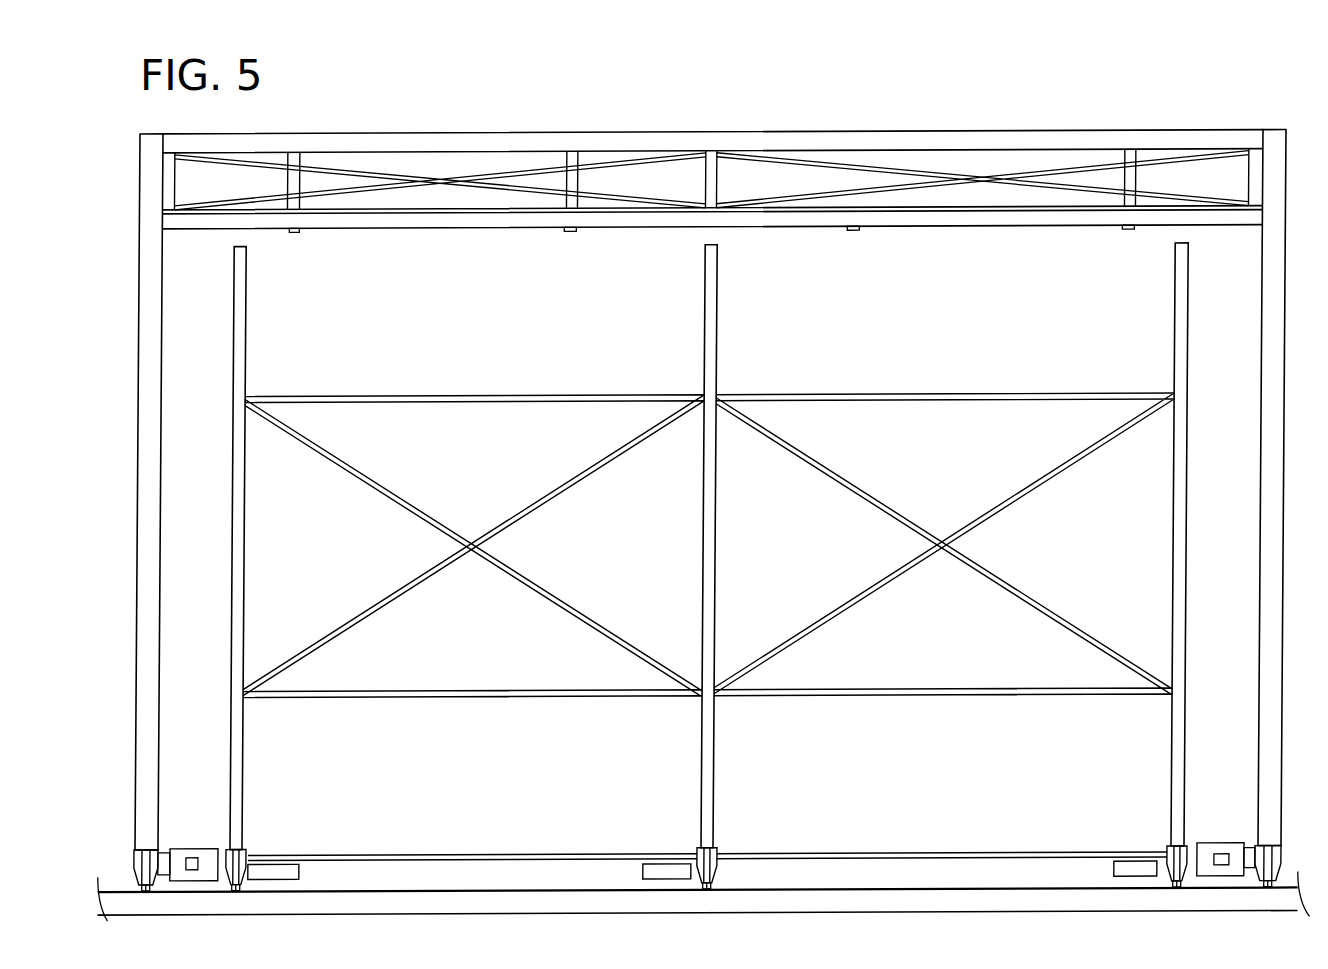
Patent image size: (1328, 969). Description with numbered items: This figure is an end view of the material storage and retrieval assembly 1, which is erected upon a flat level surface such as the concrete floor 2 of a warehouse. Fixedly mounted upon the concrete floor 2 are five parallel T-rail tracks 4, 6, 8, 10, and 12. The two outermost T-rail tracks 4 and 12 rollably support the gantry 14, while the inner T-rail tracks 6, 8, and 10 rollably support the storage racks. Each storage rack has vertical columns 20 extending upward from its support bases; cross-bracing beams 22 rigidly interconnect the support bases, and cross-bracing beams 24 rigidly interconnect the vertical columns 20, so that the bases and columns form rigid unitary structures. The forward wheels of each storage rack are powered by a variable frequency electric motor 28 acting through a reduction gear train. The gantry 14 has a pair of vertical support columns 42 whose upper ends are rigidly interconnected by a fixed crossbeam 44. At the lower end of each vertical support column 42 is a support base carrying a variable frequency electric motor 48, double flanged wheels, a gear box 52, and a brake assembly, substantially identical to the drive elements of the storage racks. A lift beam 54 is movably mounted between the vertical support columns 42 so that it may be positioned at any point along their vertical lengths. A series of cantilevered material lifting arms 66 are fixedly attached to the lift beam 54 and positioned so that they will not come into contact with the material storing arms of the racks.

The material storage and retrieval assembly 1 is at (528, 130).
The concrete floor 2 is at (560, 900).
The T-rail track 4 is at (150, 878).
The T-rail track 6 is at (247, 882).
The T-rail track 8 is at (715, 862).
The T-rail track 10 is at (1174, 850).
The T-rail track 12 is at (1283, 852).
The gantry 14 is at (1255, 266).
The vertical column 20 is at (1185, 547).
The cross-bracing beam 22 is at (896, 857).
The cross-bracing beam 24 is at (968, 398).
The variable frequency electric motor 28 is at (1145, 872).
The vertical support column 42 is at (1273, 391).
The fixed crossbeam 44 is at (927, 187).
The variable frequency electric motor 48 is at (1224, 847).
The gear box 52 is at (1259, 855).
The lift beam 54 is at (991, 146).
The cantilevered material lifting arm 66 is at (576, 238).